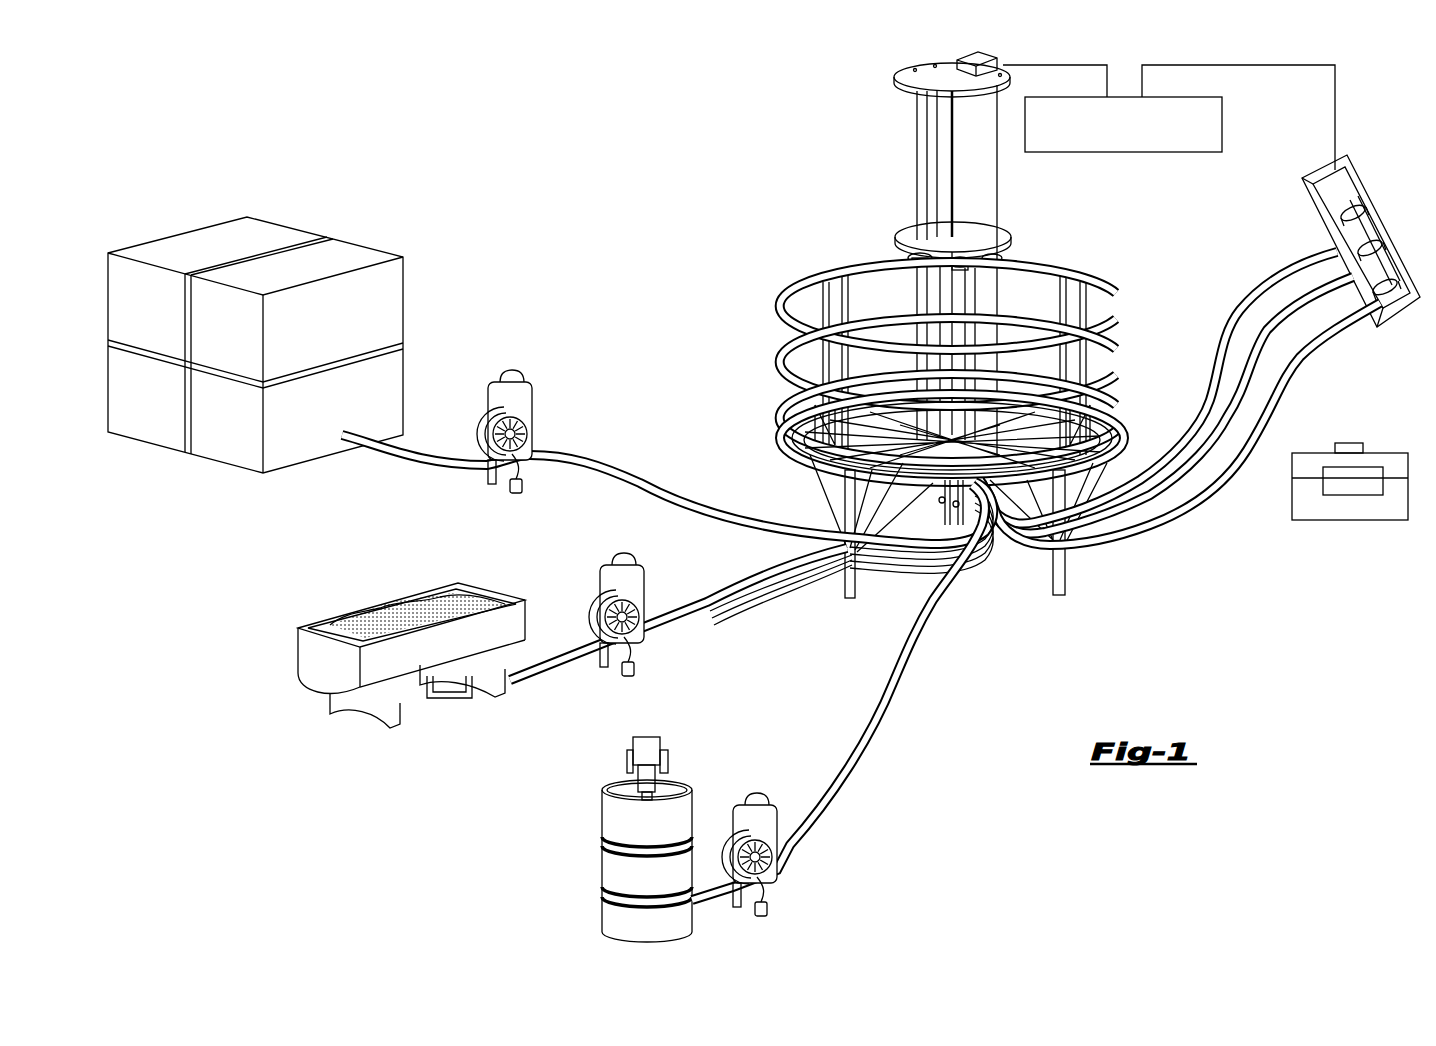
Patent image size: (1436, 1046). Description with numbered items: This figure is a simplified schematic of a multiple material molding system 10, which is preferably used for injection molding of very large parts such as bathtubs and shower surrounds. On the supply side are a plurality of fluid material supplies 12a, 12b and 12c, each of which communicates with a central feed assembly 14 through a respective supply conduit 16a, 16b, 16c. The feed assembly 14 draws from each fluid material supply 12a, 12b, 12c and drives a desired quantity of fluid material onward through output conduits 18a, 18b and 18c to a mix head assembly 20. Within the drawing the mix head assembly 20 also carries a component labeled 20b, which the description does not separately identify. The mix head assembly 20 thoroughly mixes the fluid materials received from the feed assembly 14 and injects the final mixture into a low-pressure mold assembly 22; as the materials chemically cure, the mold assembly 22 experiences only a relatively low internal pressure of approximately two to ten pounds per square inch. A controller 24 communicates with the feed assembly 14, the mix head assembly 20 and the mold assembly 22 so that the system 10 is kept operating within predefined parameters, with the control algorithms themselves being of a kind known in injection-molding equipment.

The multiple material molding system 10 is at (736, 260).
The fluid material supply 12a is at (333, 253).
The fluid material supply 12b is at (317, 672).
The fluid material supply 12c is at (623, 817).
The feed assembly 14 is at (862, 238).
The supply conduit 16a is at (607, 475).
The supply conduit 16b is at (708, 605).
The supply conduit 16c is at (867, 763).
The output conduit 18a is at (1277, 277).
The output conduit 18b is at (1273, 330).
The output conduit 18c is at (1300, 353).
The mix head assembly 20 is at (1287, 161).
The containers 20b is at (1363, 240).
The low-pressure mold assembly 22 is at (1343, 503).
The controller 24 is at (1118, 152).